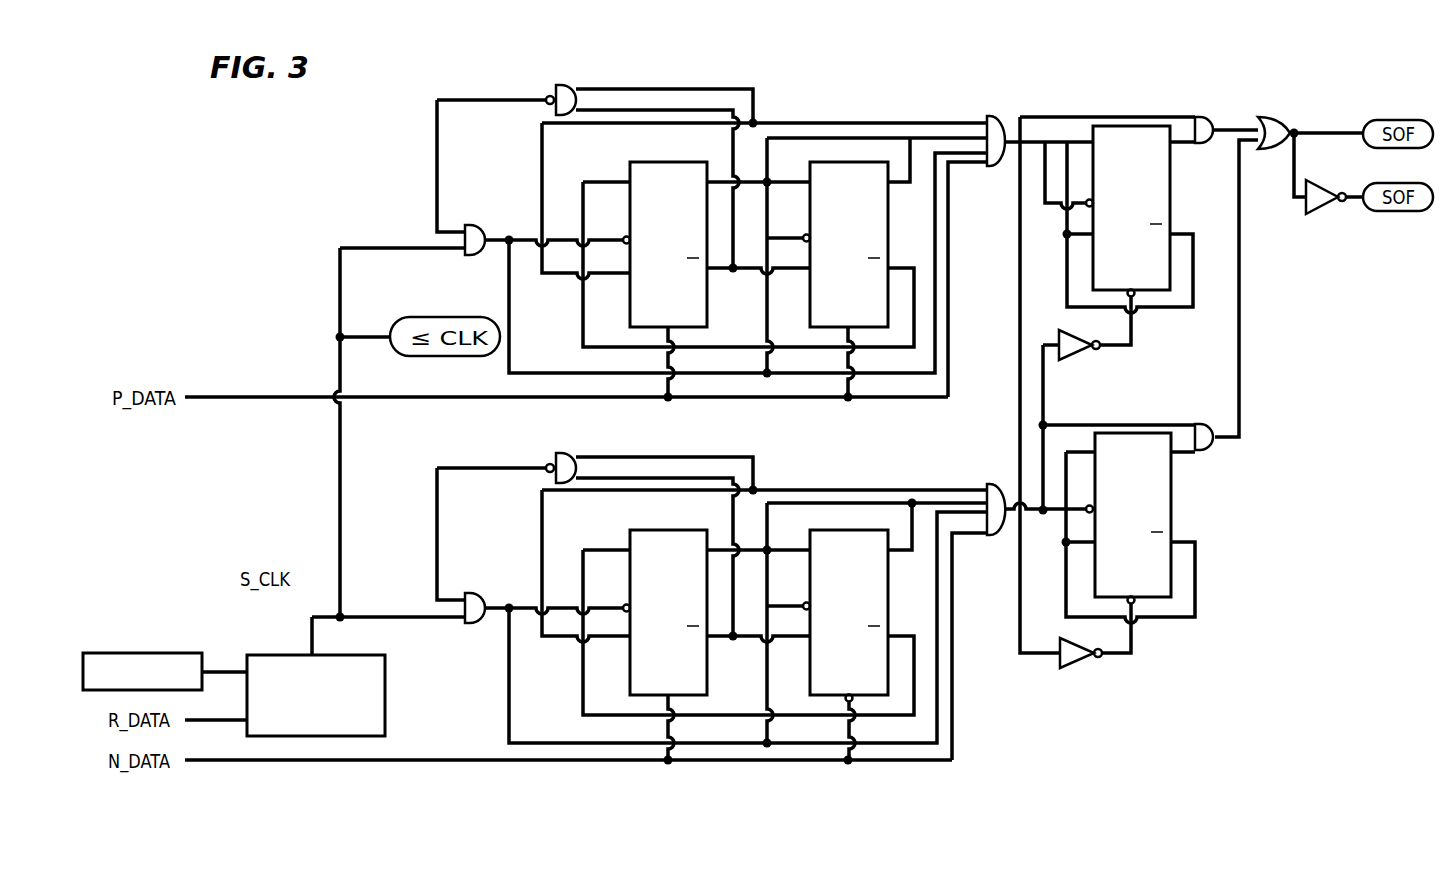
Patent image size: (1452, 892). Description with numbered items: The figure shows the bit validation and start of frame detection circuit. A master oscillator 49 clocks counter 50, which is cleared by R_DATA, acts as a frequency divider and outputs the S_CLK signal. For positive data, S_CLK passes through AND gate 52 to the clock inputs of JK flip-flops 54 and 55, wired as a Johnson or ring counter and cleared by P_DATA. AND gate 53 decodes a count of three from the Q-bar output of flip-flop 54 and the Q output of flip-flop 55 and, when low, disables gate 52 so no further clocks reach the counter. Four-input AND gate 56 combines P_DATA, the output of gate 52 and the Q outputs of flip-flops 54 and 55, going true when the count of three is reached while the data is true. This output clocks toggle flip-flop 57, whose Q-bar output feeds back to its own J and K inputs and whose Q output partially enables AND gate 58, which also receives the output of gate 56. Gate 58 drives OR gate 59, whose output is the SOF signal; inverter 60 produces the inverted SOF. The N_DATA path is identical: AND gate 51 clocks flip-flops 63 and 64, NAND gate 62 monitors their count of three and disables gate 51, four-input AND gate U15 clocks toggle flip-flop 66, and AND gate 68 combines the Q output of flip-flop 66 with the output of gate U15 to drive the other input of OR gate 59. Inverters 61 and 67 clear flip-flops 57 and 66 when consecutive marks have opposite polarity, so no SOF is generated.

The master oscillator 49 is at (148, 652).
The counter 50 is at (386, 683).
The AND gate 51 is at (484, 586).
The AND gate 52 is at (470, 258).
The AND gate 53 is at (558, 86).
The JK flip-flop 54 is at (630, 166).
The JK flip-flop 55 is at (810, 208).
The AND gate 56 is at (994, 118).
The JK flip-flop 57 is at (1132, 126).
The AND gate 58 is at (1203, 118).
The OR gate 59 is at (1272, 120).
The inverter 60 is at (1322, 212).
The inverter 61 is at (1088, 350).
The NAND gate 62 is at (558, 456).
The flip-flop 63 is at (630, 535).
The flip-flop 64 is at (810, 577).
The AND gate U15 is at (994, 488).
The flip-flop 66 is at (1172, 506).
The inverter 67 is at (1076, 668).
The AND gate 68 is at (1220, 448).